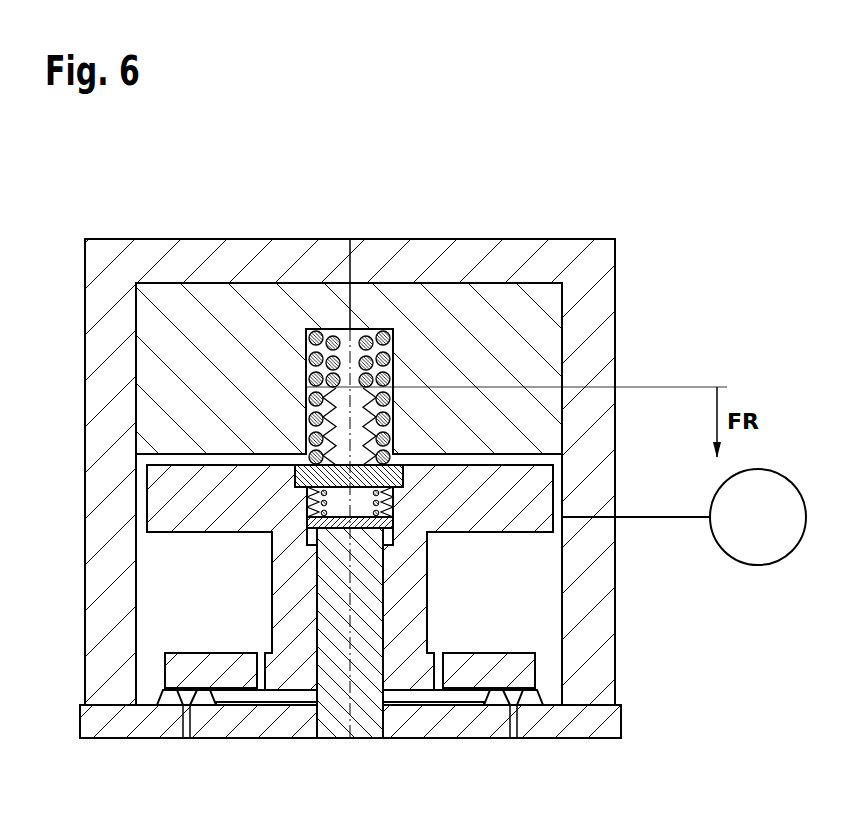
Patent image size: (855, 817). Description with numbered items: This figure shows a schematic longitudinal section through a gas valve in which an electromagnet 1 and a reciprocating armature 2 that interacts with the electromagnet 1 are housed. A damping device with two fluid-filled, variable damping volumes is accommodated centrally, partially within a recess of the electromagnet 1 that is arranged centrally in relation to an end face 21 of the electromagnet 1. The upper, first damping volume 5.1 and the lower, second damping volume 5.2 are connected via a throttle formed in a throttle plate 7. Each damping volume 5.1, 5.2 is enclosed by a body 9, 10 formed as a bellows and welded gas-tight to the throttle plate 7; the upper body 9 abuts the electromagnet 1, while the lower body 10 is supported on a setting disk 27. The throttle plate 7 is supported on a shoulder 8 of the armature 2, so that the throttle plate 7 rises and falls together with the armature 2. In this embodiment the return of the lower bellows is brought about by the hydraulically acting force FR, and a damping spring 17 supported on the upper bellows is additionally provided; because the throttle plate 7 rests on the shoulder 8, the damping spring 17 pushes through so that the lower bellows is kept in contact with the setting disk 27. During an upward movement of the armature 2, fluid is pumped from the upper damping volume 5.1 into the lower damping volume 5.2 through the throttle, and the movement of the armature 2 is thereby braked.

The electromagnet 1 is at (244, 253).
The damping spring 17 is at (362, 332).
The first damping volume 5.1 is at (343, 408).
The shoulder 8 is at (297, 482).
The end face 21 is at (193, 475).
The armature 2 is at (172, 495).
The body 10 is at (322, 515).
The second damping volume 5.2 is at (317, 548).
The body 9 is at (393, 427).
The throttle plate 7 is at (403, 486).
The setting disk 27 is at (395, 520).